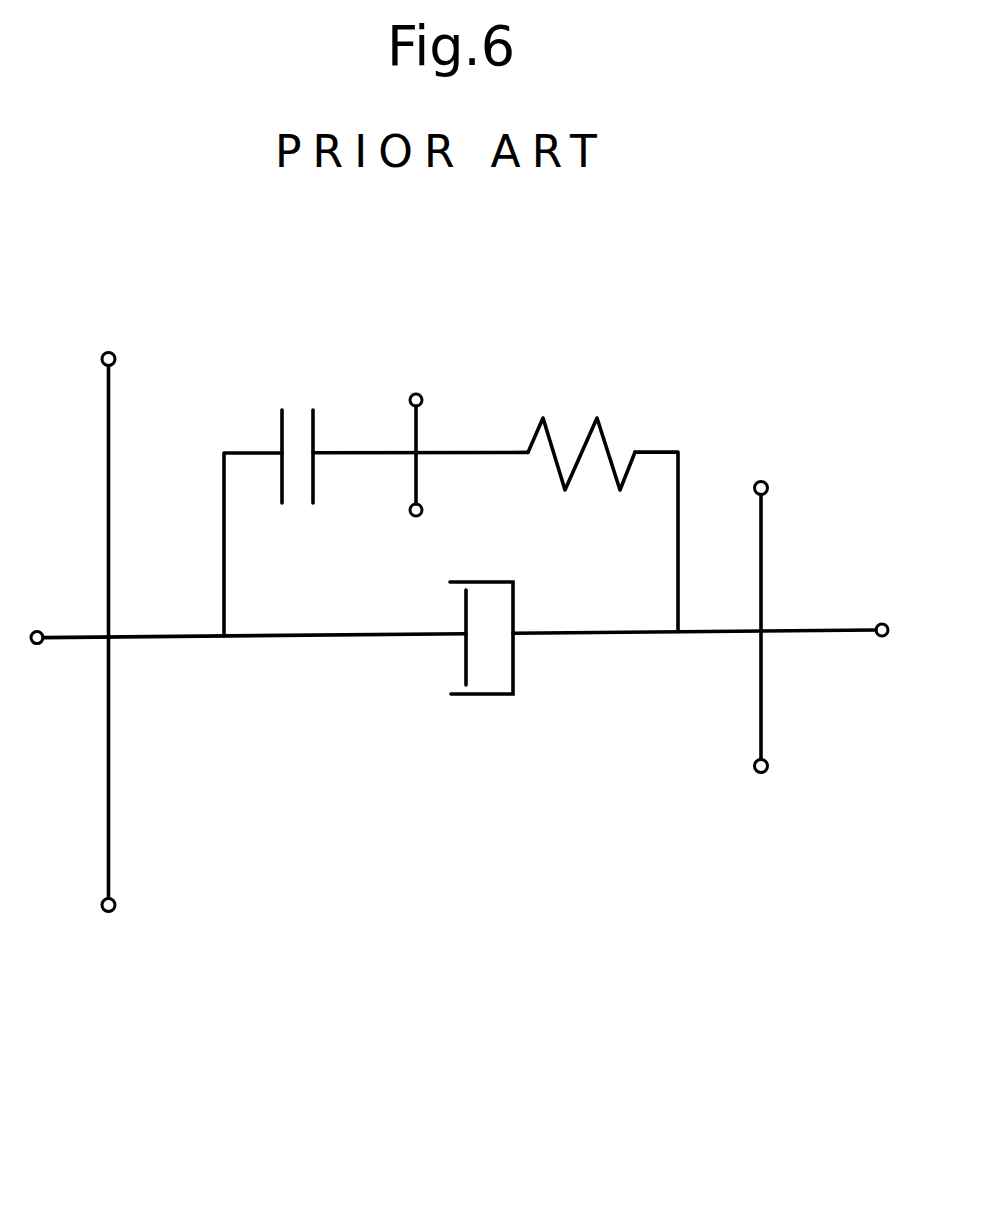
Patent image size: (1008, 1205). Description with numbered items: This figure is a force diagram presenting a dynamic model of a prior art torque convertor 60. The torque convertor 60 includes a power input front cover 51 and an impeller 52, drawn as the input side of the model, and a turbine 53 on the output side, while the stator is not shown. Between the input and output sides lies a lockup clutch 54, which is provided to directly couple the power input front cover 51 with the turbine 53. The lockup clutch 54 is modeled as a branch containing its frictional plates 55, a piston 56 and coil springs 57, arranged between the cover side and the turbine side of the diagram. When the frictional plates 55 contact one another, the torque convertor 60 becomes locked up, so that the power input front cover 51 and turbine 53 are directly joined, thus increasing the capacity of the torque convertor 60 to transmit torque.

The power input front cover 51 is at (157, 684).
The impeller 52 is at (111, 912).
The turbine 53 is at (766, 772).
The lockup clutch 54 is at (382, 394).
The frictional plates 55 is at (281, 425).
The piston 56 is at (422, 395).
The coil springs 57 is at (605, 437).
The torque convertor 60 is at (366, 846).